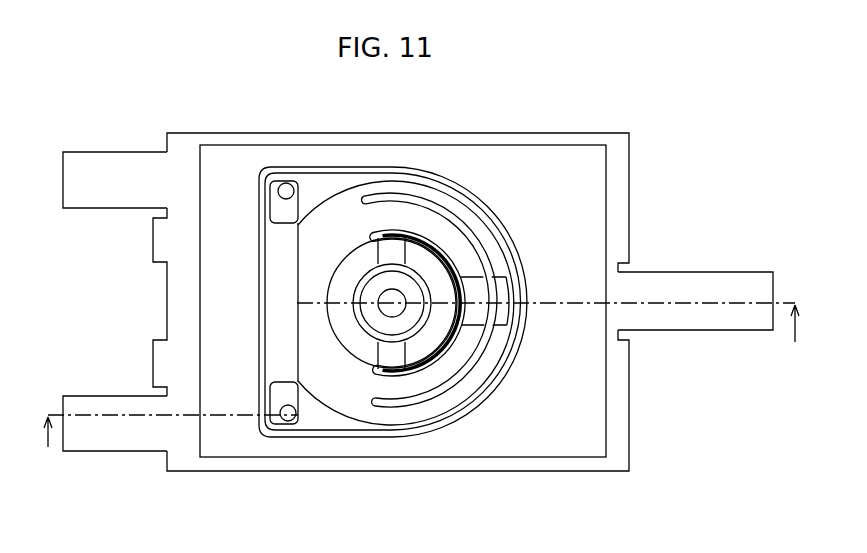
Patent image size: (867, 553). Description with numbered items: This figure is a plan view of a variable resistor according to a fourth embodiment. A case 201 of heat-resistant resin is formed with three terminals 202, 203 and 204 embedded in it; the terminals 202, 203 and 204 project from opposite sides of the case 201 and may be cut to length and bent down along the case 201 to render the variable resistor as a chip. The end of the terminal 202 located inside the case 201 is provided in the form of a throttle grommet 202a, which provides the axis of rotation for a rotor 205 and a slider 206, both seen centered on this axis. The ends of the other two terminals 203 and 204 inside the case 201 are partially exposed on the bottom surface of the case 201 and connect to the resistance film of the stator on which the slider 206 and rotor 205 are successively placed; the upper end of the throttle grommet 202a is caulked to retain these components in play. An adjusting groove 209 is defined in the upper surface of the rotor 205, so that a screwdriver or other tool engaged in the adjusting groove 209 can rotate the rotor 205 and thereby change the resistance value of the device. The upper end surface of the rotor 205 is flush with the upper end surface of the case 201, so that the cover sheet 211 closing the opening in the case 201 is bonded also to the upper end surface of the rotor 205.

The case 201 is at (630, 454).
The terminal 202 is at (665, 318).
The throttle grommet 202a is at (360, 283).
The terminal 203 is at (108, 162).
The terminal 204 is at (118, 442).
The rotor 205 is at (357, 343).
The slider 206 is at (438, 405).
The adjusting groove 209 is at (399, 357).
The cover sheet 211 is at (557, 443).